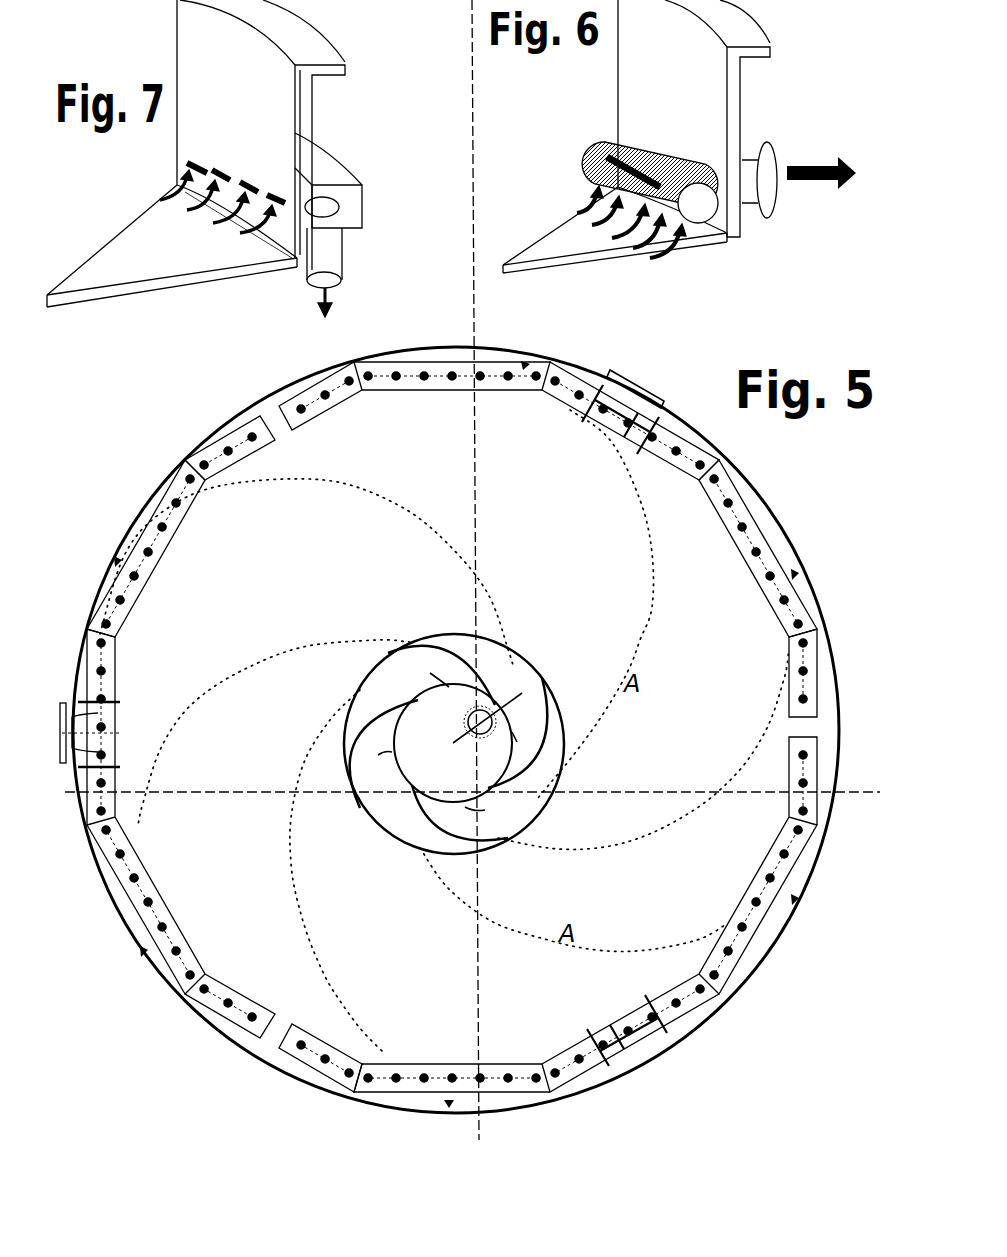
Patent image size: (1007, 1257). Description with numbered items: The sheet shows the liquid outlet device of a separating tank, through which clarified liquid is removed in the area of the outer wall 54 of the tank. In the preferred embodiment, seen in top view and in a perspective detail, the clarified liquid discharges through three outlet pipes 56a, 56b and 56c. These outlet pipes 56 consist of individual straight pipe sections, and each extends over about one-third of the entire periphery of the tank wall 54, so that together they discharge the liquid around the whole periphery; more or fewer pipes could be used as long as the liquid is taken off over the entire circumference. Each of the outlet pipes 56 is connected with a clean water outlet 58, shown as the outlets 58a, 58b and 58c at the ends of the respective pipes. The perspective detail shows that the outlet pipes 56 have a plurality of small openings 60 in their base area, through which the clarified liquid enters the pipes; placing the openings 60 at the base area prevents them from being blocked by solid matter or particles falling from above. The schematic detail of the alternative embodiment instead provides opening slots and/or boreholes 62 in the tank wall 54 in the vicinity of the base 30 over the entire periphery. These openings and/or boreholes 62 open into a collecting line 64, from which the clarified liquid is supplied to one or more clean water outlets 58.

In FIG. 7, the base 30 is at (148, 272).
In FIG. 6, the base 30 is at (565, 252).
In FIG. 7, the outer wall 54 is at (305, 105).
In FIG. 6, the outer wall 54 is at (733, 102).
In FIG. 5, the outer wall 54 is at (820, 847).
In FIG. 6, the outlet pipes 56 is at (593, 147).
In FIG. 5, the outlet pipe 56a is at (720, 517).
In FIG. 5, the outlet pipe 56b is at (160, 560).
In FIG. 5, the outlet pipe 56c is at (333, 1053).
In FIG. 7, the clean water outlet 58 is at (343, 258).
In FIG. 6, the clean water outlet 58 is at (752, 187).
In FIG. 5, the clean water outlet 58a is at (628, 383).
In FIG. 5, the clean water outlet 58b is at (67, 733).
In FIG. 5, the clean water outlet 58c is at (640, 1050).
In FIG. 6, the openings 60 is at (701, 214).
In FIG. 5, the openings 60 is at (713, 477).
In FIG. 7, the opening slots and/or boreholes 62 is at (283, 197).
In FIG. 7, the collecting line 64 is at (345, 173).